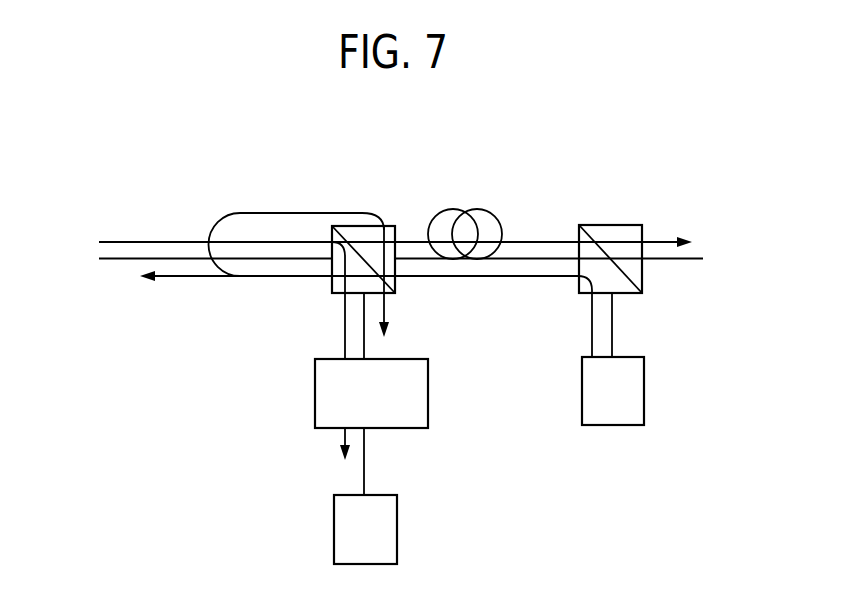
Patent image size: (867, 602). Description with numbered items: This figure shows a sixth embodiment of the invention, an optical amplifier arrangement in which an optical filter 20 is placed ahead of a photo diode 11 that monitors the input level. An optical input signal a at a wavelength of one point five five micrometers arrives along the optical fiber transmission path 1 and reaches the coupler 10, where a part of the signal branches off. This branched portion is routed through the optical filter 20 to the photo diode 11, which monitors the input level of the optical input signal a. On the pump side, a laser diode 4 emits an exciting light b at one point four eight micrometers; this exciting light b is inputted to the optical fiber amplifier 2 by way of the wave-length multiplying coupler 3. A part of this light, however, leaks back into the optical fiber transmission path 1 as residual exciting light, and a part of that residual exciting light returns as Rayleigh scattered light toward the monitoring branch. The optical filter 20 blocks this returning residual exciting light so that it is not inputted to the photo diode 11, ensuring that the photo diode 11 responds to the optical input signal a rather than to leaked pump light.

The optical fiber transmission path 1 is at (115, 262).
The optical input signal a is at (186, 240).
The exciting light b is at (307, 212).
The coupler 10 is at (388, 225).
The optical fiber amplifier 2 is at (490, 211).
The wave-length multiplying coupler 3 is at (643, 229).
The laser diode 4 is at (644, 393).
The optical filter 20 is at (428, 395).
The photo diode 11 is at (397, 507).